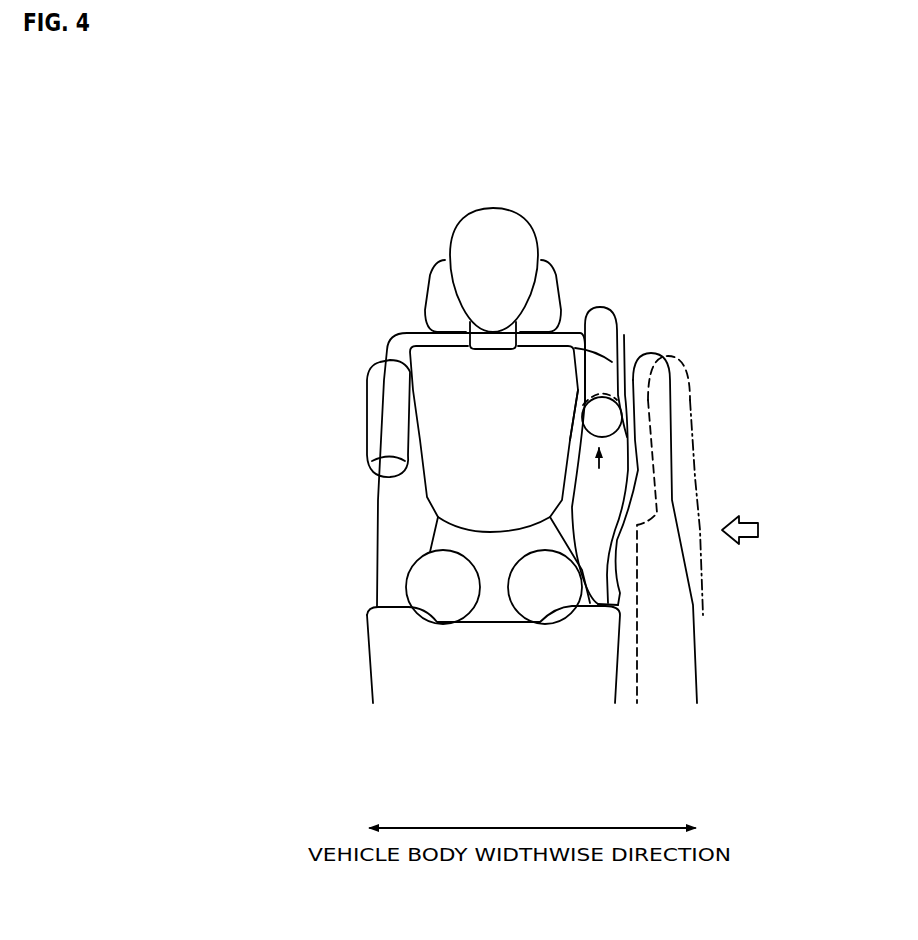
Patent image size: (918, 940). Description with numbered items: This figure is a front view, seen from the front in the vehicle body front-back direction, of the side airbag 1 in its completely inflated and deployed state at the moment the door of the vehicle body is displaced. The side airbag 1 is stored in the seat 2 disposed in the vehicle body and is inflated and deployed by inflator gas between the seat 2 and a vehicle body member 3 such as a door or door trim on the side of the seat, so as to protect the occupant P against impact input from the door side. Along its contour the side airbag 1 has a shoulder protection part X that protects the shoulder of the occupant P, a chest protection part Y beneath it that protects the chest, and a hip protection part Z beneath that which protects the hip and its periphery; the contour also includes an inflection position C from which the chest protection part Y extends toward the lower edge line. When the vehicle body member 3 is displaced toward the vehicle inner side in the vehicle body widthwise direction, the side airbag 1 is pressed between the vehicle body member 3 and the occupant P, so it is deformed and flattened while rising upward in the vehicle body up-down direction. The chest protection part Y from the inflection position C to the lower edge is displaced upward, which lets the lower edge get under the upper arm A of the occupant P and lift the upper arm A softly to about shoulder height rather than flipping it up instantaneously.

The side airbag 1 is at (636, 310).
The seat 2 is at (377, 296).
The vehicle body member 3 is at (671, 403).
The occupant P is at (458, 200).
The shoulder protection part X is at (612, 283).
The upper arm A is at (613, 360).
The inflection position C is at (597, 400).
The chest protection part Y is at (568, 426).
The hip protection part Z is at (624, 597).